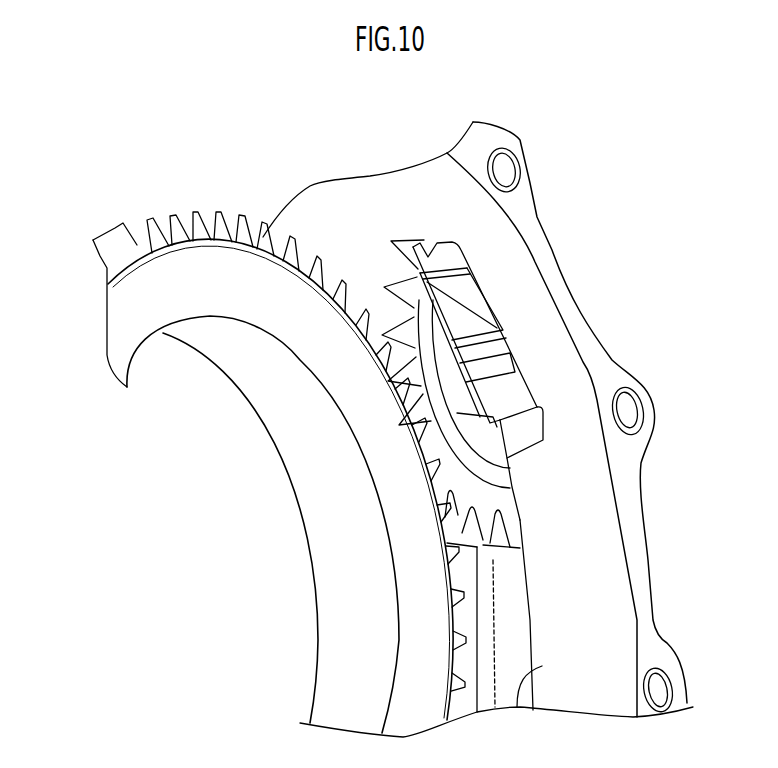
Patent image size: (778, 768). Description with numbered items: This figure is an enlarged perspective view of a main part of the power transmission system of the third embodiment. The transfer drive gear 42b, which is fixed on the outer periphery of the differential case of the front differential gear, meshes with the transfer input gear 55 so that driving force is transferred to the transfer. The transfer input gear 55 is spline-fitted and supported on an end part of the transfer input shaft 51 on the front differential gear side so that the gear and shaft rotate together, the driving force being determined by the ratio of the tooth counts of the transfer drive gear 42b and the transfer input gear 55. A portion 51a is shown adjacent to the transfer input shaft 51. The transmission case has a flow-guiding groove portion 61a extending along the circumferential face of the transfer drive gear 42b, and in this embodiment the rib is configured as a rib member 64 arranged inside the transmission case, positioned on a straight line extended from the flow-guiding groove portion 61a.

The transfer drive gear 42b is at (147, 293).
The transfer input shaft 51 is at (433, 353).
The stopper portion of bracket 51a is at (540, 415).
The transfer input gear 55 is at (450, 259).
The rib member 64 is at (463, 310).
The flow-guiding groove portion 61a is at (515, 677).